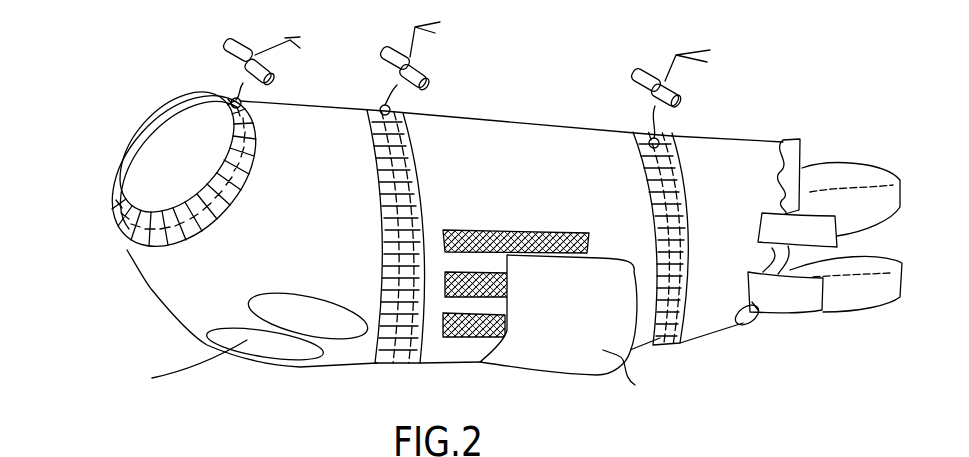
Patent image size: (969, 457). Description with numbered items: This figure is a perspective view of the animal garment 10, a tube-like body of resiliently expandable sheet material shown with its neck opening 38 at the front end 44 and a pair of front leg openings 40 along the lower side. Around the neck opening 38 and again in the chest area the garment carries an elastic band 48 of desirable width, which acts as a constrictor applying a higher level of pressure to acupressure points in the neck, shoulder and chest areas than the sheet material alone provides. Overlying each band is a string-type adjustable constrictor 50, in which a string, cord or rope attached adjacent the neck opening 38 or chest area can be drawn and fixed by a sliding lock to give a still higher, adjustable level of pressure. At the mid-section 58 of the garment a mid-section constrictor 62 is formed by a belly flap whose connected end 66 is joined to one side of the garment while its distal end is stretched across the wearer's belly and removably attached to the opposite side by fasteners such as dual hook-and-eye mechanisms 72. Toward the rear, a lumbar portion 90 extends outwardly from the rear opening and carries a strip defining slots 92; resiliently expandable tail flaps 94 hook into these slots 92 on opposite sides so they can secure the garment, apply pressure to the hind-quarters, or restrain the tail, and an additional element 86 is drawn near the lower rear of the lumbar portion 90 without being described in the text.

The animal garment 10 is at (466, 78).
The neck opening 38 is at (170, 167).
The front leg openings 40 is at (333, 319).
The front end 44 is at (152, 290).
The elastic band 48 is at (122, 230).
The string-type adjustable constrictor 50 is at (250, 45).
The mid-section 58 is at (190, 443).
The mid-section constrictor 62 is at (635, 385).
The connected end of belly flap 66 is at (457, 363).
The dual hook-and-eye mechanism 72 is at (115, 443).
The fastener 86 is at (763, 318).
The lumbar portion 90 is at (707, 160).
The slots 92 is at (783, 140).
The tail flap 94 is at (818, 175).